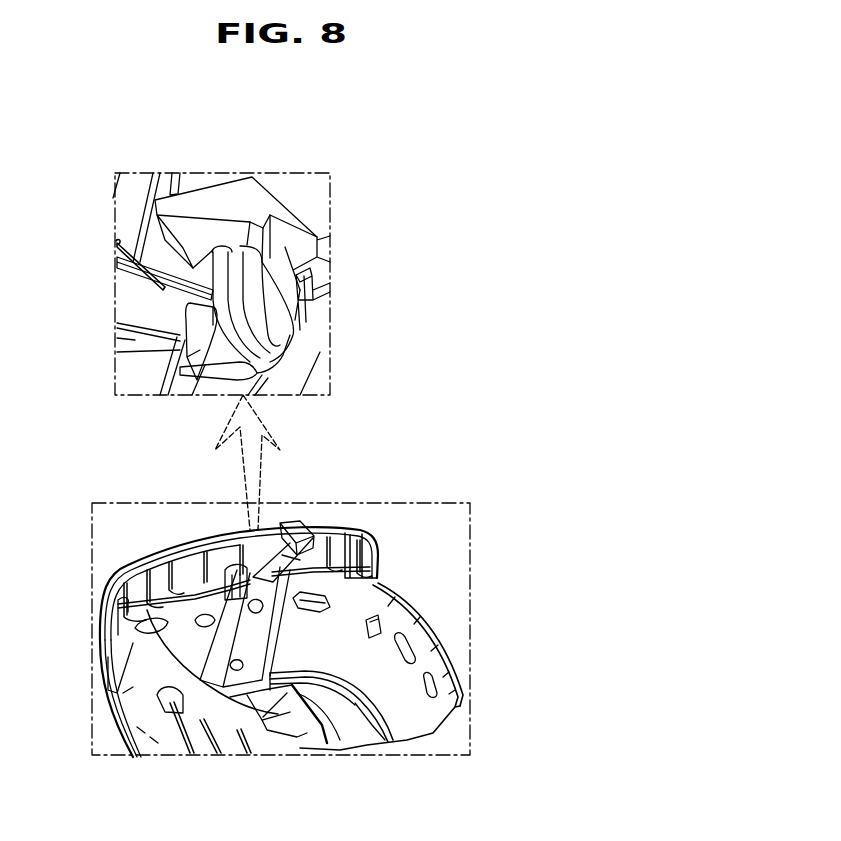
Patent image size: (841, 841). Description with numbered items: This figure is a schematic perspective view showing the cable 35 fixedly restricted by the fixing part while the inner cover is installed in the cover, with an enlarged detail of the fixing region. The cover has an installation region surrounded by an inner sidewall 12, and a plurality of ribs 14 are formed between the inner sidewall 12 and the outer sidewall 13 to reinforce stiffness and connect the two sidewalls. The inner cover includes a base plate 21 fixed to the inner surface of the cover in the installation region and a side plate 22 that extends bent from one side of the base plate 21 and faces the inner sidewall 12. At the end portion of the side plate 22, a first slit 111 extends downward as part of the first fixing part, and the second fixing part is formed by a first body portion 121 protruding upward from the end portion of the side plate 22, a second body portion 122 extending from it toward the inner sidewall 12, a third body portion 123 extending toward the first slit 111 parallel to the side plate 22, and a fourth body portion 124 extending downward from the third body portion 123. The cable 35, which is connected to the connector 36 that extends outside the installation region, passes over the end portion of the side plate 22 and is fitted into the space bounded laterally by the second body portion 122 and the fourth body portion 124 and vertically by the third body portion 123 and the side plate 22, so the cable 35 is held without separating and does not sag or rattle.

The inner sidewall 12 is at (141, 307).
The outer sidewall 13 is at (166, 543).
The ribs 14 is at (126, 272).
The base plate 21 is at (310, 728).
The side plate 22 is at (130, 379).
The cable 35 is at (272, 330).
The connector 36 is at (295, 522).
The first slit 111 is at (186, 337).
The first body portion 121 is at (300, 279).
The second body portion 122 is at (290, 228).
The third body portion 123 is at (217, 197).
The fourth body portion 124 is at (185, 237).